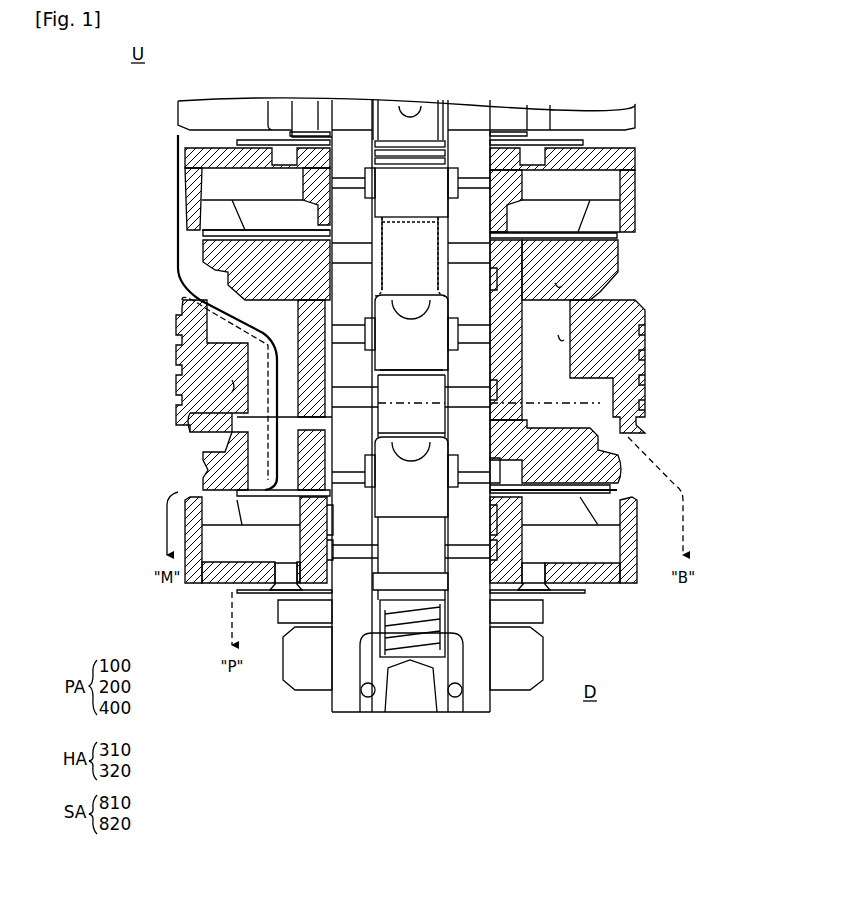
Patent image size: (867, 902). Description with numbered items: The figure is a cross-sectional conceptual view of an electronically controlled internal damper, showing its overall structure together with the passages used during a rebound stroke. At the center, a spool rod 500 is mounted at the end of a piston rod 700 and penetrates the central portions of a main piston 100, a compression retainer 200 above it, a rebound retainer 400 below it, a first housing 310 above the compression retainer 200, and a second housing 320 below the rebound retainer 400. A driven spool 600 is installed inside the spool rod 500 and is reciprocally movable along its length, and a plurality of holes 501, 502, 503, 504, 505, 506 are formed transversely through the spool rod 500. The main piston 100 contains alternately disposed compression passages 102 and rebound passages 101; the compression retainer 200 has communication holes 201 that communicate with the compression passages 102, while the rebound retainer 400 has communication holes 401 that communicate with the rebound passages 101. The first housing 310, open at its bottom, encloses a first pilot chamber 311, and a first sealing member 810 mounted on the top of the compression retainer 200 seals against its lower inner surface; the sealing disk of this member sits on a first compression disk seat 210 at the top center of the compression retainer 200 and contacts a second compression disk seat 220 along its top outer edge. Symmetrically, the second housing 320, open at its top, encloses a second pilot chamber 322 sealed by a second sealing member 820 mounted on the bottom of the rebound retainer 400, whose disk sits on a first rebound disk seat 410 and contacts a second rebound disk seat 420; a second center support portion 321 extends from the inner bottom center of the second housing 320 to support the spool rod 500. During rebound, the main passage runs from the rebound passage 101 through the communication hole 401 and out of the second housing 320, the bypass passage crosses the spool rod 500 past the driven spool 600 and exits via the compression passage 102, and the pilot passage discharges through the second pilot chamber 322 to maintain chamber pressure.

The main piston 100 is at (176, 340).
The rebound passage 101 is at (232, 387).
The compression passage 102 is at (560, 340).
The compression retainer 200 is at (178, 278).
The communication hole 201 is at (560, 287).
The first compression disk seat 210 is at (300, 250).
The second compression disk seat 220 is at (260, 235).
The first housing 310 is at (182, 180).
The first pilot chamber 311 is at (232, 190).
The second housing 320 is at (185, 522).
The second center support portion 321 is at (298, 556).
The second pilot chamber 322 is at (590, 565).
The rebound retainer 400 is at (205, 470).
The communication hole 401 is at (255, 455).
The first rebound disk seat 410 is at (612, 488).
The second rebound disk seat 420 is at (612, 493).
The spool rod 500 is at (342, 108).
The hole 501 is at (352, 181).
The hole 502 is at (352, 246).
The hole 503 is at (352, 331).
The hole 504 is at (352, 390).
The hole 505 is at (352, 445).
The hole 506 is at (352, 550).
The driven spool 600 is at (430, 107).
The piston rod 700 is at (222, 107).
The first sealing member 810 is at (612, 192).
The second sealing member 820 is at (205, 582).